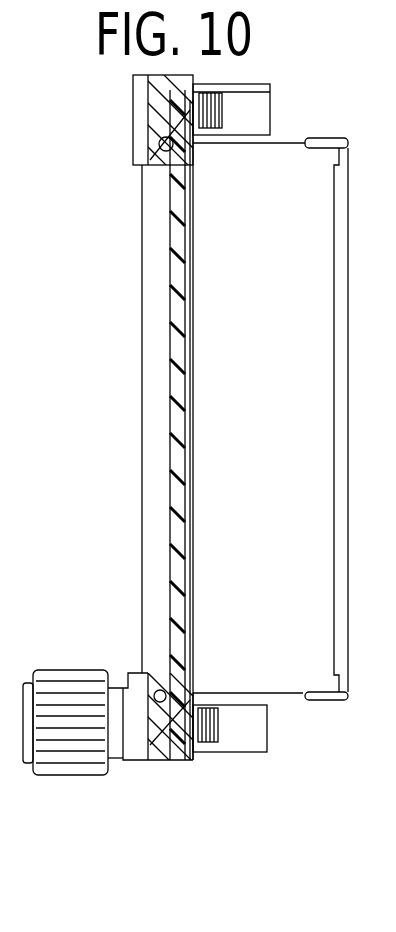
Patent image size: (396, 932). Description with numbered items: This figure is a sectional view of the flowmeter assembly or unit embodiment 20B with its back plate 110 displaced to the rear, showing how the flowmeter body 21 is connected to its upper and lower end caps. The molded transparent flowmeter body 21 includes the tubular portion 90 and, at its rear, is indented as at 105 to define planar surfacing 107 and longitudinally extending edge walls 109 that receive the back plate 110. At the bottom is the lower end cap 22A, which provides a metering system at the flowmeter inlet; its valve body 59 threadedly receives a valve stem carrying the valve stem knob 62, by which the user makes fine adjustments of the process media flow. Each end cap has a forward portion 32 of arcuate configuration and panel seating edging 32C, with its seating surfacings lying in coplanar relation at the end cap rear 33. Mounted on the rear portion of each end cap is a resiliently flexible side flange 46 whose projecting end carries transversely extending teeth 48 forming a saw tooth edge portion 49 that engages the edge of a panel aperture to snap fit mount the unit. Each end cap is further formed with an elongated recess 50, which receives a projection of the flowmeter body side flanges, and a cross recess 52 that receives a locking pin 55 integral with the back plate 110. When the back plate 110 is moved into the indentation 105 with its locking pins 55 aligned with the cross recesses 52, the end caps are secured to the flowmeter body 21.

The flowmeter assembly or unit embodiment 20B is at (126, 491).
The flowmeter body 21 is at (143, 297).
The lower end cap 22A is at (152, 753).
The forward portion 32 is at (138, 110).
The panel seating edging 32C is at (197, 78).
The end cap rear 33 is at (288, 107).
The side flange 46 is at (249, 118).
The teeth 48 is at (222, 140).
The saw tooth edge portion 49 is at (236, 98).
The elongated recess 50 is at (167, 125).
The cross recess 52 is at (160, 160).
The locking pin 55 is at (317, 148).
The valve body 59 is at (187, 760).
The valve stem knob 62 is at (33, 692).
The tubular portion 90 is at (155, 243).
The indentation 105 is at (187, 350).
The planar surfacing 107 is at (183, 420).
The edge walls 109 is at (192, 377).
The back plate 110 is at (350, 583).